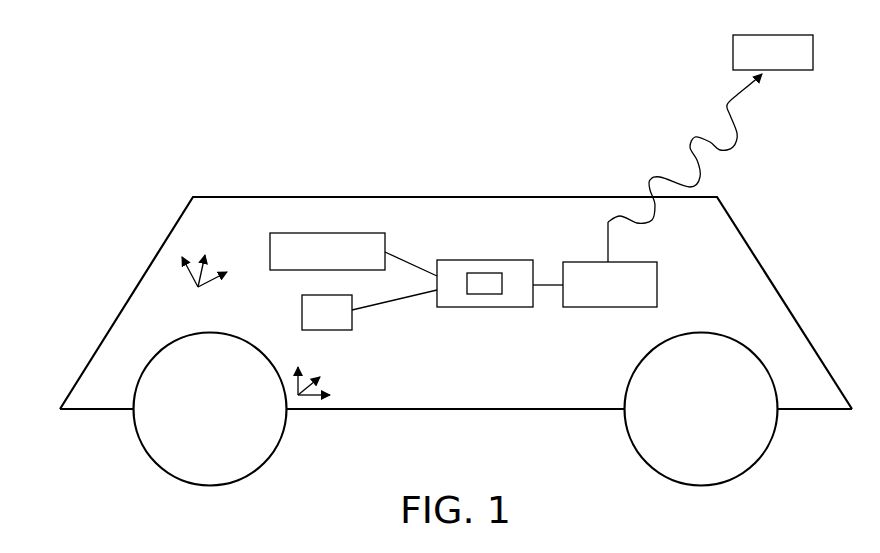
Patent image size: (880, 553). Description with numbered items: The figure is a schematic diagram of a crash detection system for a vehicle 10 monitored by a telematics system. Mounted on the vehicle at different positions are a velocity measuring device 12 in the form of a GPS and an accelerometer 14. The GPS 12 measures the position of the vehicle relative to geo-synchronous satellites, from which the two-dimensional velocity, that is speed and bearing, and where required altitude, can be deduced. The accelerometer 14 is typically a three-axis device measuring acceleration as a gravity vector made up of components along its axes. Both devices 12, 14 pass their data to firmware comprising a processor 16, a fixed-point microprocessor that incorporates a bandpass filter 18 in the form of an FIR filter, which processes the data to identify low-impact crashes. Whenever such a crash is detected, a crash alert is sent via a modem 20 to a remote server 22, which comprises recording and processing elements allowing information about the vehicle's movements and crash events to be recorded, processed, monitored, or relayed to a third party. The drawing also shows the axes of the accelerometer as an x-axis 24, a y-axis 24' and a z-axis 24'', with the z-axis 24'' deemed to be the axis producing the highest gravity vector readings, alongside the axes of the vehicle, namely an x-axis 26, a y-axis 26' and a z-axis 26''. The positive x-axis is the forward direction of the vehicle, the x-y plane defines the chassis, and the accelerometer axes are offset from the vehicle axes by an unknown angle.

The vehicle 10 is at (426, 187).
The velocity measuring device 12 is at (352, 318).
The accelerometer 14 is at (385, 244).
The processor 16 is at (487, 260).
The bandpass filter 18 is at (487, 294).
The modem 20 is at (657, 283).
The remote server 22 is at (733, 48).
The x-axis 24 is at (204, 279).
The y-axis 24' is at (233, 259).
The z-axis 24'' is at (169, 272).
The x-axis 26 is at (337, 395).
The y-axis 26' is at (340, 377).
The z-axis 26'' is at (326, 368).